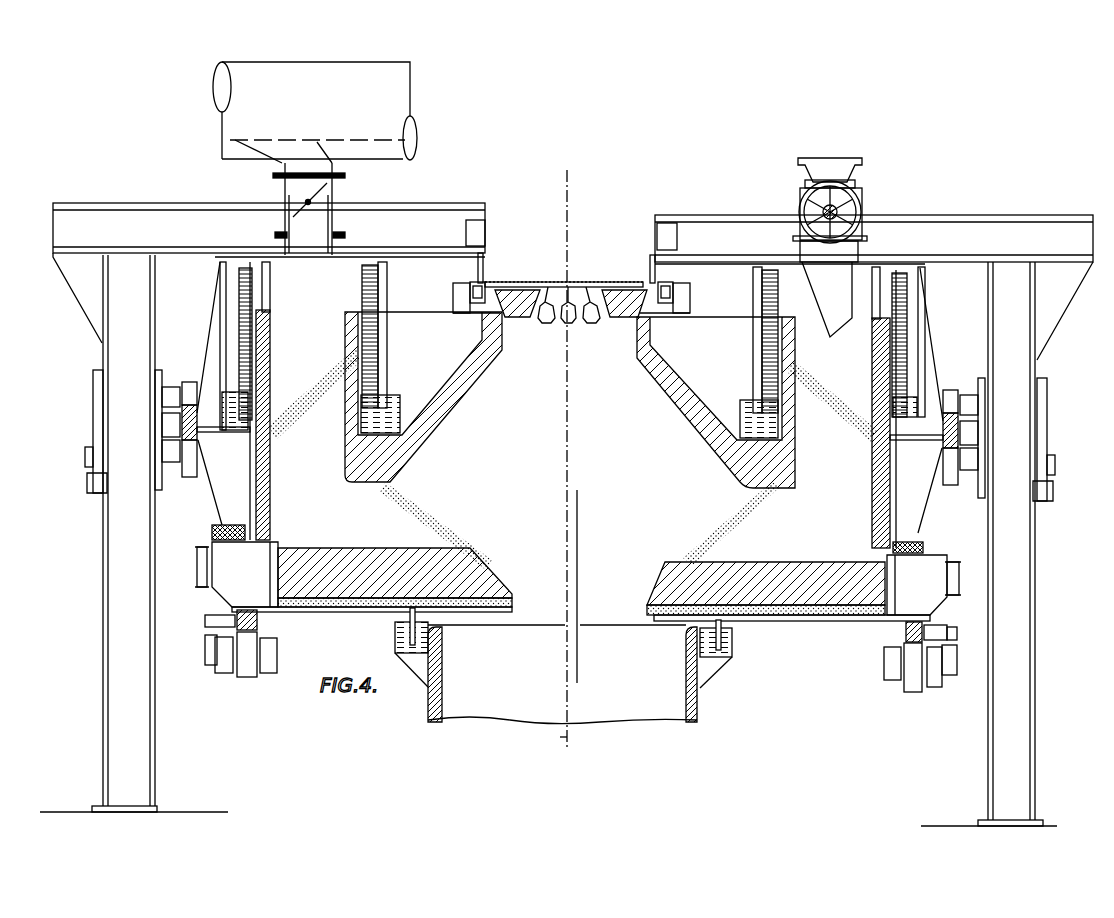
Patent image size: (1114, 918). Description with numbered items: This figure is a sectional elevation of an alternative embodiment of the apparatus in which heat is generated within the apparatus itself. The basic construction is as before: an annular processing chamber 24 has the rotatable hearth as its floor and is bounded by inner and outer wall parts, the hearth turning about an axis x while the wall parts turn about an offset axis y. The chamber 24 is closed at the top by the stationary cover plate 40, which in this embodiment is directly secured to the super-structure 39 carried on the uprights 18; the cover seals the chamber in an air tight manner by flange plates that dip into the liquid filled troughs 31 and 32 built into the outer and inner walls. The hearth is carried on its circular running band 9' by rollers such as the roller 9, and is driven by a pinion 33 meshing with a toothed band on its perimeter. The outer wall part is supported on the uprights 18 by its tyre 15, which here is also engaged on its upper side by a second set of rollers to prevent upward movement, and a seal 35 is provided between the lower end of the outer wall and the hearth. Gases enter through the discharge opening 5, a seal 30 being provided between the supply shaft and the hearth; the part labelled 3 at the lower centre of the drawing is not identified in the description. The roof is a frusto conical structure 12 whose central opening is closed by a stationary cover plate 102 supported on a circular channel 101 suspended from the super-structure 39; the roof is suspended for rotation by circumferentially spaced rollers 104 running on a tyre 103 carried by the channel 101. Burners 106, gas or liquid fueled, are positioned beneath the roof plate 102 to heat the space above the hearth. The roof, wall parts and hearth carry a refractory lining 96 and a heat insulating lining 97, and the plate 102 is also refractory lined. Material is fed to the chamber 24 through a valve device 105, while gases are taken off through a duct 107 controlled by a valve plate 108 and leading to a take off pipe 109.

The collecting pot 3 is at (686, 678).
The discharge opening 5 is at (617, 614).
The roller 9 is at (581, 659).
The running band 9' is at (579, 626).
The frusto conical structure 12 is at (687, 403).
The tyre 15 is at (196, 436).
The uprights 18 is at (137, 553).
The annular processing chamber 24 is at (318, 310).
The seal 30 is at (395, 640).
The liquid filled trough 31 is at (787, 417).
The liquid filled trough 32 is at (892, 412).
The pinion 33 is at (960, 586).
The seal 35 is at (212, 529).
The super-structure 39 is at (186, 199).
The cover plate 40 is at (367, 251).
The refractory lining 96 is at (872, 533).
The heat insulating lining 97 is at (887, 570).
The circular channel 101 is at (512, 316).
The cover plate 102 is at (552, 284).
The tyre 103 is at (470, 300).
The rollers 104 is at (478, 286).
The valve device 105 is at (848, 205).
The burners 106 is at (568, 324).
The duct 107 is at (328, 186).
The valve plate 108 is at (306, 201).
The take off pipe 109 is at (232, 151).
The axis x is at (577, 660).
The axis y is at (554, 737).